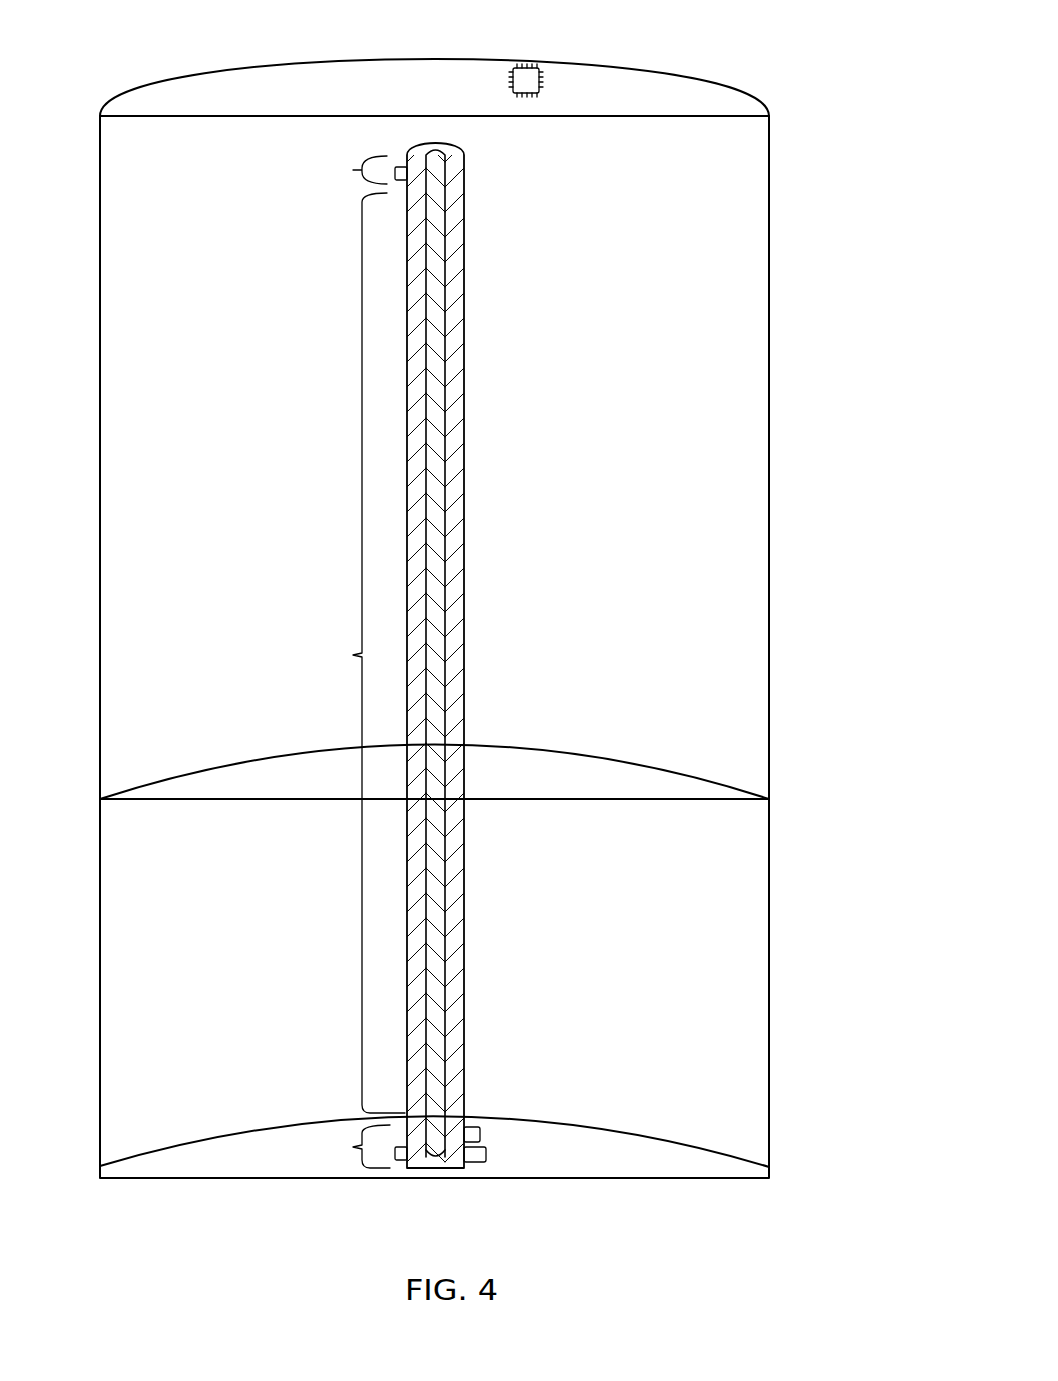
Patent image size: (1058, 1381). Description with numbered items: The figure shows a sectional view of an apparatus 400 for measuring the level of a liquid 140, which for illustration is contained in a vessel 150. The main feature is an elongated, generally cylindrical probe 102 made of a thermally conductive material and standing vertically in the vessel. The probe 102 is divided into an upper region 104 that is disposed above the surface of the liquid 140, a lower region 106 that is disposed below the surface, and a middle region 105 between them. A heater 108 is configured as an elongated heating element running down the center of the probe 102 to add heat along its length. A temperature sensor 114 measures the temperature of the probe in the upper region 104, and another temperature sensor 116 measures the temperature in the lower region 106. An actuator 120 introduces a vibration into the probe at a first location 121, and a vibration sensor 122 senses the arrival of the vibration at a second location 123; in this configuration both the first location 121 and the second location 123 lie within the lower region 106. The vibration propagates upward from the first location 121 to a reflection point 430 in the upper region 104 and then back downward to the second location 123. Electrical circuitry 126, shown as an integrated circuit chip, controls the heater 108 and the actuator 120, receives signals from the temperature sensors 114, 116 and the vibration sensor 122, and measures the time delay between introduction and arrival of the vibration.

The apparatus 400 is at (596, 371).
The vessel 150 is at (770, 704).
The liquid 140 is at (725, 905).
The probe 102 is at (455, 592).
The heater 108 is at (435, 492).
The upper region 104 is at (341, 170).
The middle region 105 is at (350, 653).
The lower region 106 is at (342, 1146).
The temperature sensor 114 is at (398, 166).
The temperature sensor 116 is at (400, 1161).
The reflection point 430 is at (429, 128).
The electrical circuitry 126 is at (526, 82).
The second location 123 is at (456, 1135).
The vibration sensor 122 is at (473, 1133).
The first location 121 is at (453, 1162).
The actuator 120 is at (486, 1157).